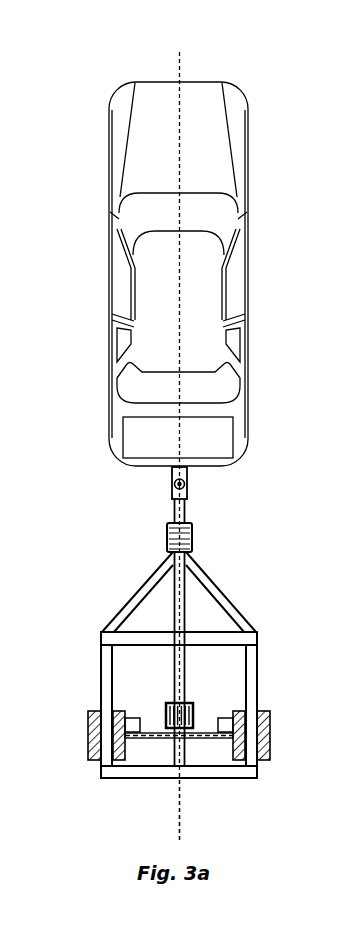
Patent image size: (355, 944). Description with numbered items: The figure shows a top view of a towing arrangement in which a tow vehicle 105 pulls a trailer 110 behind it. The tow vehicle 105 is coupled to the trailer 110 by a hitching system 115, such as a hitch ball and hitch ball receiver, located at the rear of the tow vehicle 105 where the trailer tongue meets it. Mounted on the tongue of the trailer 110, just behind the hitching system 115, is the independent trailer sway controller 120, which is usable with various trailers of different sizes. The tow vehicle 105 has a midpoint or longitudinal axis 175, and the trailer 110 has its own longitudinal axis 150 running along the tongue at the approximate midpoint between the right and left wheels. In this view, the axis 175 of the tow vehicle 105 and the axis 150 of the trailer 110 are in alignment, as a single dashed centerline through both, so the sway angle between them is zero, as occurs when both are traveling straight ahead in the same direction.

The tow vehicle 105 is at (252, 112).
The trailer 110 is at (312, 596).
The hitching system 115 is at (172, 499).
The independent trailer sway controller 120 is at (193, 548).
The longitudinal axis of the trailer 150 is at (180, 822).
The longitudinal axis of the tow vehicle 175 is at (181, 72).